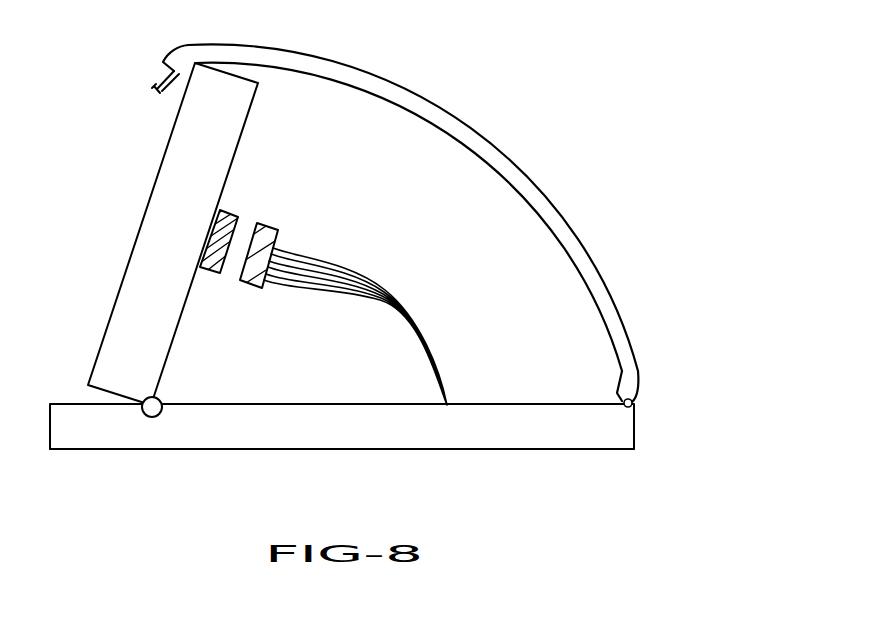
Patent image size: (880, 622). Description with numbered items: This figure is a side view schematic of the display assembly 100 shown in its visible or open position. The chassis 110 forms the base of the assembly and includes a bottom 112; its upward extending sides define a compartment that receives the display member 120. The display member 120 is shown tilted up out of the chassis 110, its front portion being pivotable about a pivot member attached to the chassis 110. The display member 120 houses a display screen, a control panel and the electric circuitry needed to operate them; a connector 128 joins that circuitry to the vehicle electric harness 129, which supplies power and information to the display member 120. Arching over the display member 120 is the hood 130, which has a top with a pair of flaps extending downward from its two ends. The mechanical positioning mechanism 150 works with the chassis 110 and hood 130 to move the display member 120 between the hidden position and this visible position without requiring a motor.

The display assembly 100 is at (580, 173).
The chassis 110 is at (463, 442).
The bottom 112 is at (205, 450).
The display member 120 is at (187, 307).
The connector 128 is at (222, 212).
The vehicle electric harness 129 is at (273, 223).
The hood 130 is at (442, 110).
The mechanical positioning mechanism 150 is at (655, 328).